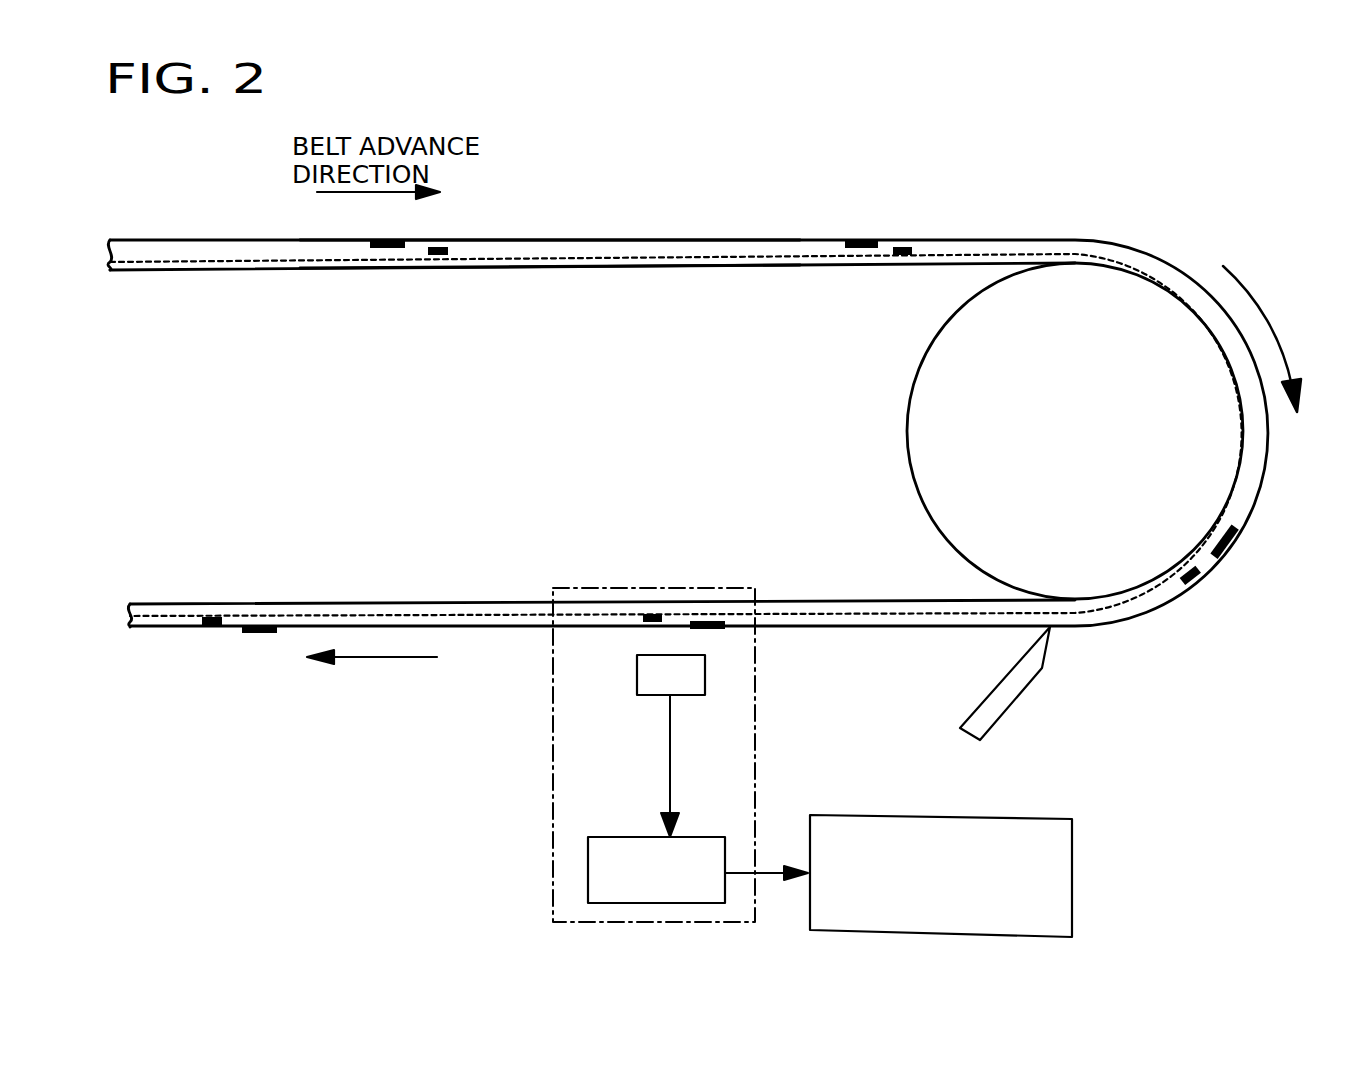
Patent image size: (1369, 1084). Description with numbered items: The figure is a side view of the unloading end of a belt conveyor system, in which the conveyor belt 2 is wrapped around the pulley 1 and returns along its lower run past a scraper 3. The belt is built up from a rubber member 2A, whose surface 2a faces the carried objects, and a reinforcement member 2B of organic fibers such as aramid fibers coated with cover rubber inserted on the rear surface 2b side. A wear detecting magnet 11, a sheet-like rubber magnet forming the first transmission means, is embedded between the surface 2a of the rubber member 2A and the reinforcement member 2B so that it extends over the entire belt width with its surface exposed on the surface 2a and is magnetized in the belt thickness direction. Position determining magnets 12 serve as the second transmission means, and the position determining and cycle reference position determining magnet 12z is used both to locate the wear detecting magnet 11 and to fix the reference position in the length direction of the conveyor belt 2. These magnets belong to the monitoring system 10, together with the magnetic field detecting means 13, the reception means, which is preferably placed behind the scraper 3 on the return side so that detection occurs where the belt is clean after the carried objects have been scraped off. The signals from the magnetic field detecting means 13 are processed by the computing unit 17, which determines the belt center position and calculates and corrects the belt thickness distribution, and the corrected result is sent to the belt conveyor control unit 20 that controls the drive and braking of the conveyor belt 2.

The pulley 1 is at (1080, 293).
The conveyor belt 2 is at (650, 240).
The surface of rubber member 2a is at (610, 226).
The rear surface 2b is at (610, 283).
The rubber member 2A is at (772, 252).
The reinforcement member 2B is at (922, 247).
The scraper 3 is at (1035, 682).
The monitoring system 10 is at (560, 720).
The wear detecting magnet 11 is at (385, 257).
The position determining magnet 12 is at (207, 612).
The position determining and cycle reference position determining magnet 12z is at (437, 258).
The magnetic field detecting means 13 is at (705, 672).
The computing unit 17 is at (693, 837).
The belt conveyor control unit 20 is at (898, 815).